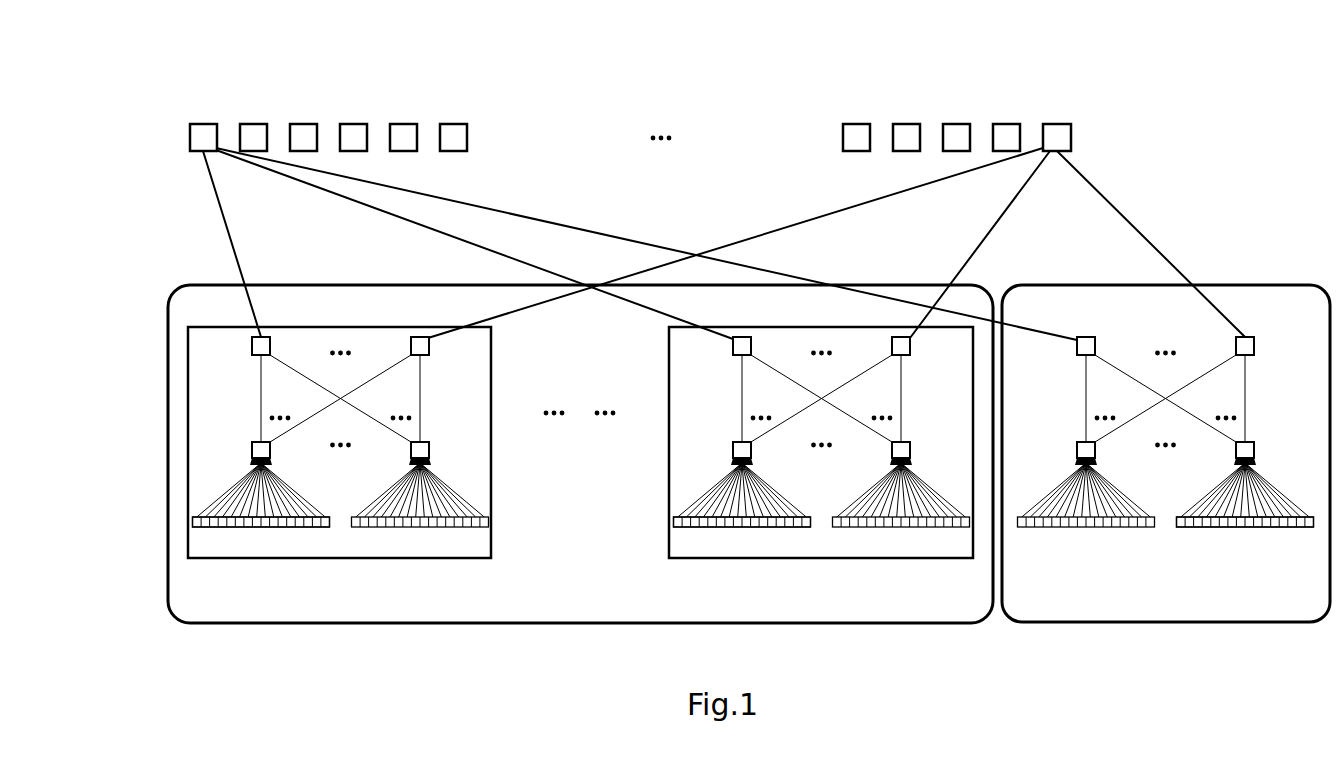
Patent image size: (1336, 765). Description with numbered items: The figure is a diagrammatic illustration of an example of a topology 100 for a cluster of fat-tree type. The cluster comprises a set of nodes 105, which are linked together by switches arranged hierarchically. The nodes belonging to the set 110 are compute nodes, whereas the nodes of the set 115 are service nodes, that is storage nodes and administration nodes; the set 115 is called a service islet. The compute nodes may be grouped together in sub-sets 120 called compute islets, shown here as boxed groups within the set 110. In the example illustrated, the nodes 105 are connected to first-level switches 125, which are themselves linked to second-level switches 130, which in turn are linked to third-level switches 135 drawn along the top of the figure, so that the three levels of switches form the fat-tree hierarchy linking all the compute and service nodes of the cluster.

The topology 100 is at (1200, 92).
The nodes 105 is at (258, 527).
The set of compute nodes 110 is at (372, 625).
The set of service nodes 115 is at (1162, 622).
The sub-sets 120 is at (821, 505).
The first-level switches 125 is at (910, 447).
The second-level switches 130 is at (910, 345).
The third-level switches 135 is at (1057, 123).